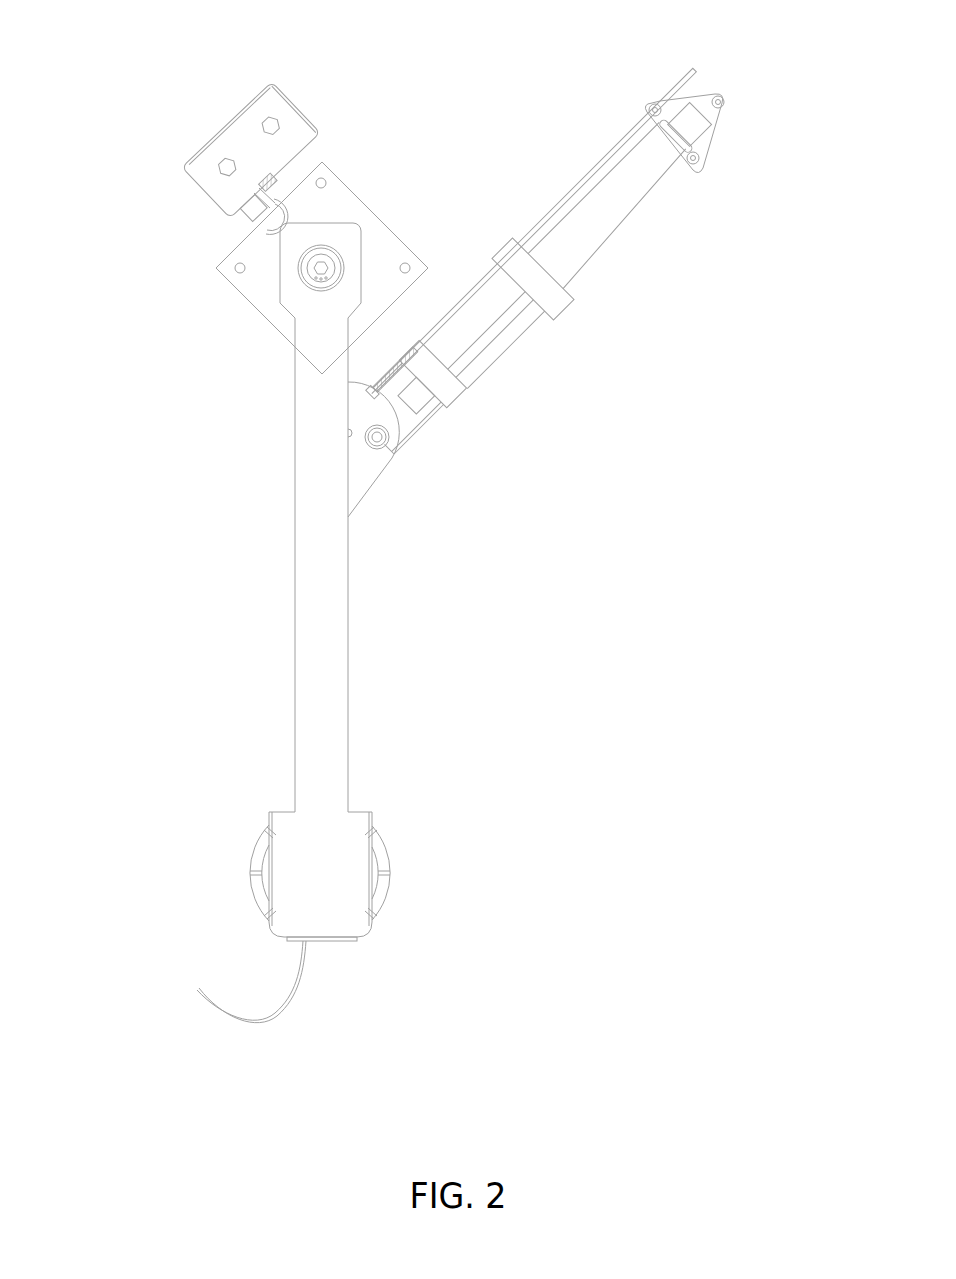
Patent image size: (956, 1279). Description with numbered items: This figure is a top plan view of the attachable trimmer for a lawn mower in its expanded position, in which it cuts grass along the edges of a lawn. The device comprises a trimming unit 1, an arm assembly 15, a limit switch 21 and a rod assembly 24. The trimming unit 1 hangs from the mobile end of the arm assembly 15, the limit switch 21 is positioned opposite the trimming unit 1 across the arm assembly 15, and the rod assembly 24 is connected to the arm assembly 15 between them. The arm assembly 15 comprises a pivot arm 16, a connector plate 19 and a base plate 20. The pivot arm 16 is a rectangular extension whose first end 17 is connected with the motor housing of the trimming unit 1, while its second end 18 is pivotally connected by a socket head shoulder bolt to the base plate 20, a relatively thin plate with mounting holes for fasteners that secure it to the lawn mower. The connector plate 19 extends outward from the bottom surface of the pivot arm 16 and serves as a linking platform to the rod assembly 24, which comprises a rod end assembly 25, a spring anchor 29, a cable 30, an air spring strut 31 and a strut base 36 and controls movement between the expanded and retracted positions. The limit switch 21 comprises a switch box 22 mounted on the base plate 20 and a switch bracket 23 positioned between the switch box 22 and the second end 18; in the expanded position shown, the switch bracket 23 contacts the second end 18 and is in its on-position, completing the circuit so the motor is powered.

The trimming unit 1 is at (415, 866).
The arm assembly 15 is at (276, 447).
The pivot arm 16 is at (333, 638).
The first end 17 is at (335, 912).
The second end 18 is at (343, 240).
The connector plate 19 is at (365, 473).
The base plate 20 is at (257, 300).
The limit switch 21 is at (152, 143).
The switch box 22 is at (245, 137).
The switch bracket 23 is at (268, 213).
The rod assembly 24 is at (573, 250).
The rod end assembly 25 is at (458, 420).
The spring anchor 29 is at (381, 382).
The cable 30 is at (678, 88).
The air spring strut 31 is at (610, 256).
The strut base 36 is at (708, 136).